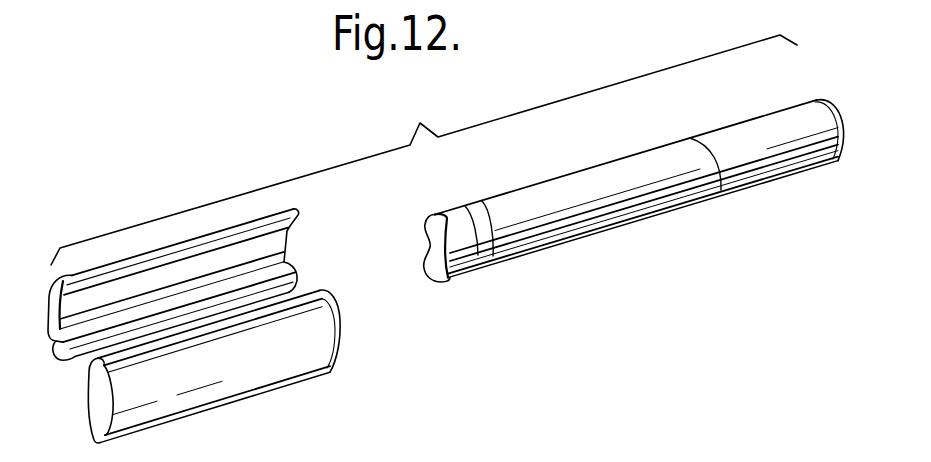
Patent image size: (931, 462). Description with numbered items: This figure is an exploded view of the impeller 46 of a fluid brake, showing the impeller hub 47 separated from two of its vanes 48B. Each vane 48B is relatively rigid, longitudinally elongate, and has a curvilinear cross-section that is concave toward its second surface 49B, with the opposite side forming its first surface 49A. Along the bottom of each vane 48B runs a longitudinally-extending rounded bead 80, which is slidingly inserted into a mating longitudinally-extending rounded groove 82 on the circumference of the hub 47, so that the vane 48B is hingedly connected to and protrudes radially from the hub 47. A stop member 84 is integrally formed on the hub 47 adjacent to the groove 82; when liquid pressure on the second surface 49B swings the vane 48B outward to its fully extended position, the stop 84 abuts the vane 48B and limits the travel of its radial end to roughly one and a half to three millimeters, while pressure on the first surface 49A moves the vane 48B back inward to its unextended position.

The impeller 46 is at (424, 150).
The impeller hub 47 is at (634, 211).
The vane 48B is at (186, 309).
The first surface 49A is at (207, 368).
The second surface 49B is at (88, 308).
The rounded bead 80 is at (296, 272).
The rounded groove 82 is at (450, 274).
The stop member 84 is at (585, 213).